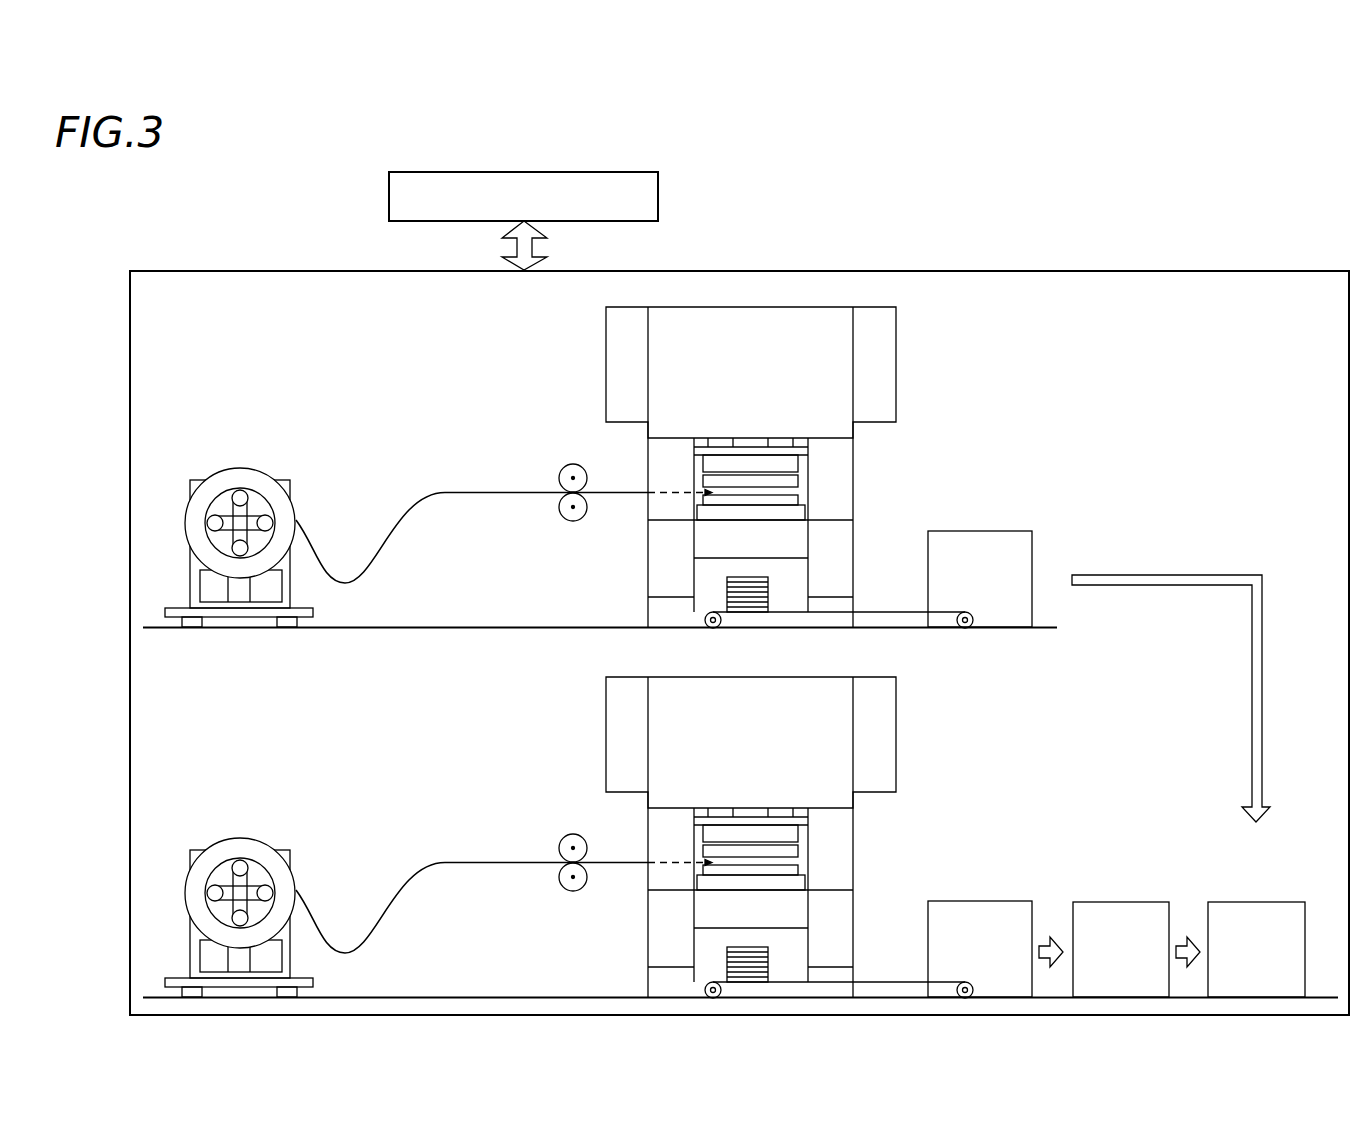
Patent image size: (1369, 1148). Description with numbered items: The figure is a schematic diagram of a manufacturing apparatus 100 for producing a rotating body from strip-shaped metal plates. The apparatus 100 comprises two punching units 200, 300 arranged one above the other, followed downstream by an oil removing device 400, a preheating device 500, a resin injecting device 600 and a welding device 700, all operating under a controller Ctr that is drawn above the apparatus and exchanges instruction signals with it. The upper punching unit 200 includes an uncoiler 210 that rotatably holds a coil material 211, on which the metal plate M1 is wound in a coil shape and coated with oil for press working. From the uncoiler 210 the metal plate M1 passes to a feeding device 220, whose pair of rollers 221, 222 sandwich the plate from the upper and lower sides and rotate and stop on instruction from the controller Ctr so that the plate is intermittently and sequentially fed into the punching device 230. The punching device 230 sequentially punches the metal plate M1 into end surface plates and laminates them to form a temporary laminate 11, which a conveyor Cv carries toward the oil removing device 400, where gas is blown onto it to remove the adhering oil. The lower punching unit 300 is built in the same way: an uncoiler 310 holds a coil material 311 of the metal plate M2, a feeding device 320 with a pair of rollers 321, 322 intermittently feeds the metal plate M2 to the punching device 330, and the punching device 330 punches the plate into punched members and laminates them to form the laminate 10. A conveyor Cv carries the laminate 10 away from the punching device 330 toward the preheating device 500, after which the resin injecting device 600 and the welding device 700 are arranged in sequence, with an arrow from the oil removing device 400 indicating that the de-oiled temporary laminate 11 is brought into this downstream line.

The manufacturing apparatus 100 is at (282, 240).
The controller Ctr is at (658, 193).
The punching unit 200 is at (252, 358).
The uncoiler 210 is at (193, 479).
The coil material 211 is at (240, 468).
The metal plate M1 is at (315, 552).
The feeding device 220 is at (528, 477).
The roller 221 is at (600, 452).
The roller 222 is at (582, 520).
The punching device 230 is at (943, 355).
The temporary laminate 11 is at (717, 587).
The conveyor Cv is at (898, 612).
The oil removing device 400 is at (1010, 531).
The punching unit 300 is at (434, 836).
The uncoiler 310 is at (235, 897).
The coil material 311 is at (240, 865).
The metal plate M2 is at (504, 907).
The feeding device 320 is at (568, 848).
The roller 321 is at (592, 828).
The roller 322 is at (602, 893).
The punching device 330 is at (774, 828).
The laminate 10 is at (668, 956).
The preheating device 500 is at (982, 918).
The resin injecting device 600 is at (1148, 901).
The welding device 700 is at (1285, 901).